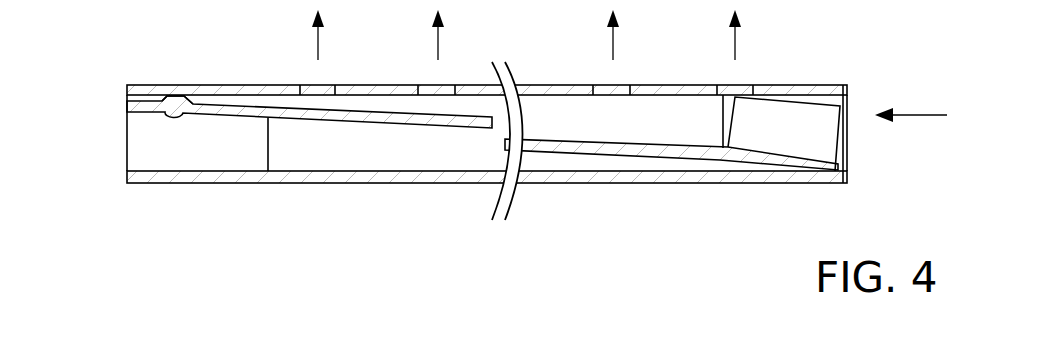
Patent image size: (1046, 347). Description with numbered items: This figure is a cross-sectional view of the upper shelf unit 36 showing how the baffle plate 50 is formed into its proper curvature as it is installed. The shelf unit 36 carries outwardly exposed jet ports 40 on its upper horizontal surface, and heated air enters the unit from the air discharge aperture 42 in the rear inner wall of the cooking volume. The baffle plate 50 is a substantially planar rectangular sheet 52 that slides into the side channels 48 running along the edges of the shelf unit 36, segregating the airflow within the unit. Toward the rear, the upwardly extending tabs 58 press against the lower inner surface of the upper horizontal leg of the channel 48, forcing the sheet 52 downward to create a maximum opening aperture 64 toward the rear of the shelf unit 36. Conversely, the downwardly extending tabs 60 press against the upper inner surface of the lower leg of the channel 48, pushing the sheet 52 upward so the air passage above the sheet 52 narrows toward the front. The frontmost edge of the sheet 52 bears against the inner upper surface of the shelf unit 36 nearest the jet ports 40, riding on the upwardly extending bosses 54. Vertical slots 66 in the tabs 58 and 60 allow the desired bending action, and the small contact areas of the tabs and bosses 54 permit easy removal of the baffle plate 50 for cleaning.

The upper shelf unit 36 is at (199, 221).
The jet ports 40 is at (300, 85).
The air discharge aperture 42 is at (933, 83).
The side channels 48 is at (233, 162).
The baffle plate 50 is at (218, 134).
The sheet 52 is at (362, 113).
The bosses 54 is at (172, 113).
The tabs 58 is at (700, 123).
The tabs 60 is at (403, 145).
The maximum opening aperture 64 is at (882, 153).
The vertical slots 66 is at (727, 104).